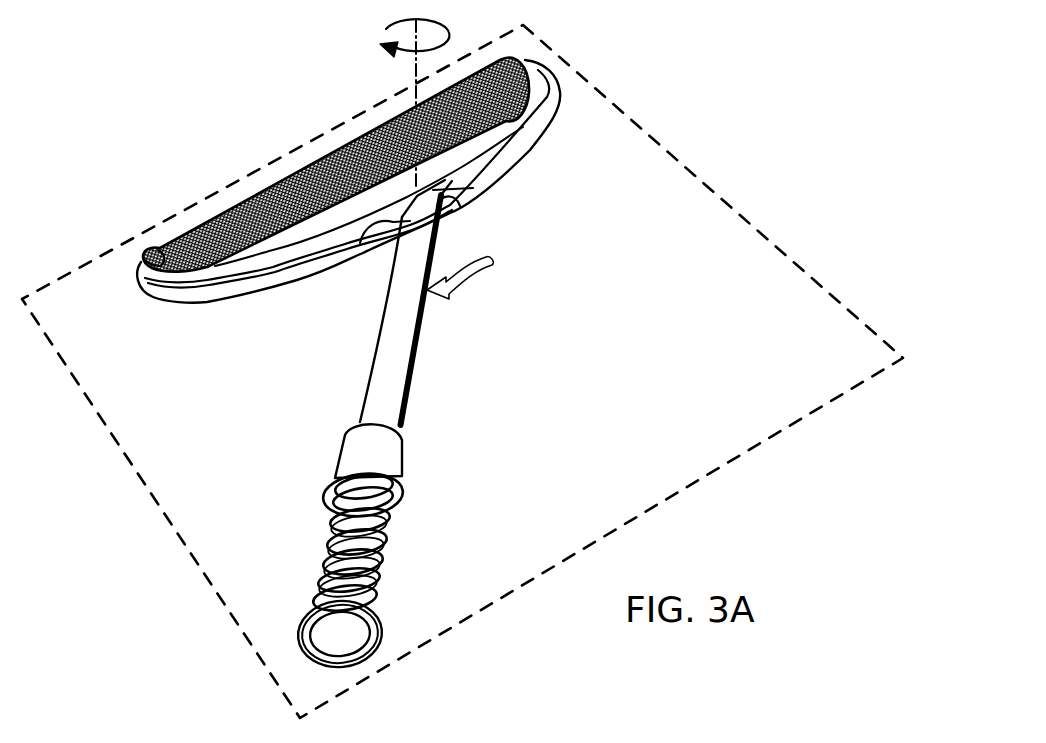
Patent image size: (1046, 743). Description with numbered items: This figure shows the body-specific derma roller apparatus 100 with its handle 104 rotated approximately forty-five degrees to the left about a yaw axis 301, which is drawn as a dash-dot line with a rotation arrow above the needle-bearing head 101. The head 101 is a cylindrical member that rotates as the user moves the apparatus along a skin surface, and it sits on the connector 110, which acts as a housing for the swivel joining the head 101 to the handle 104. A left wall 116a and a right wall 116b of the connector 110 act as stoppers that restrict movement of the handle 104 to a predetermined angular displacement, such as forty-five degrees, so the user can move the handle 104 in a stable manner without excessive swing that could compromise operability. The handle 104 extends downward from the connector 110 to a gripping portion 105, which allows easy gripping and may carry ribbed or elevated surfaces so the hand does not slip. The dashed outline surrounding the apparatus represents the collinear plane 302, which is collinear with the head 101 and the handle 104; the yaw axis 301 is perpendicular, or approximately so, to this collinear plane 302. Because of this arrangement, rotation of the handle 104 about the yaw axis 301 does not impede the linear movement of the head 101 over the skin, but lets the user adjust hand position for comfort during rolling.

The body-specific derma roller apparatus 100 is at (603, 263).
The head 101 is at (262, 173).
The handle 104 is at (463, 425).
The gripping portion 105 is at (312, 525).
The connector 110 is at (264, 300).
The left wall 116a is at (357, 237).
The right wall 116b is at (466, 199).
The yaw axis 301 is at (415, 71).
The collinear plane 302 is at (668, 142).